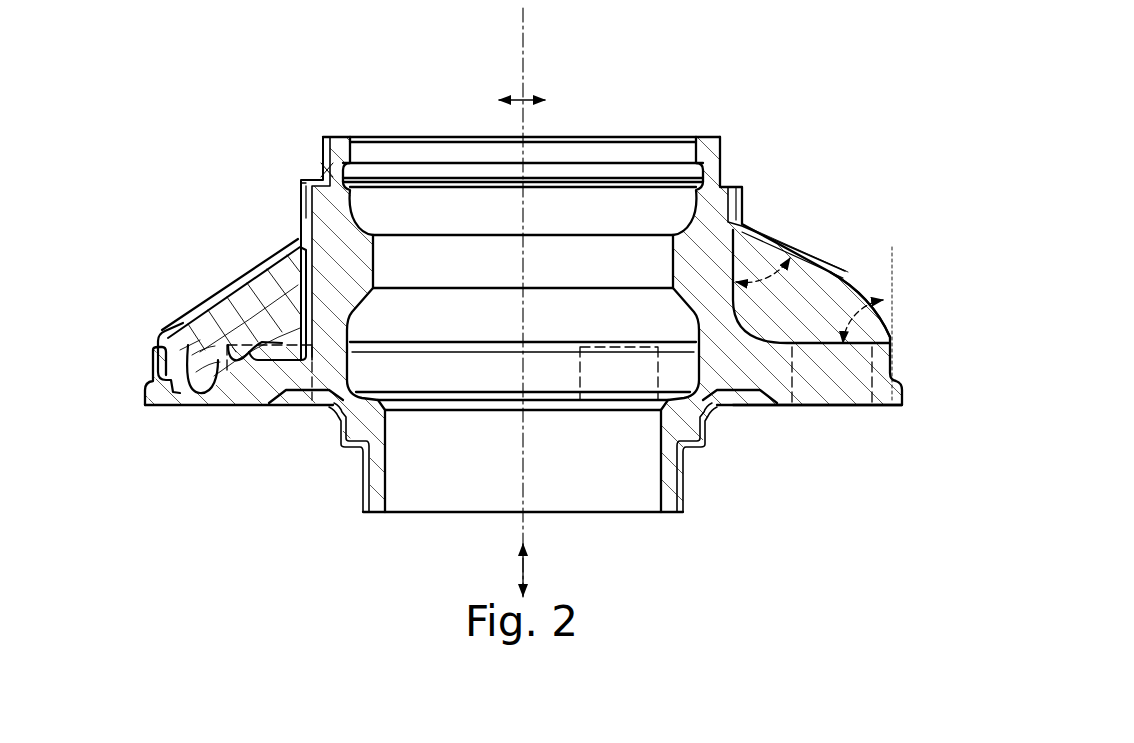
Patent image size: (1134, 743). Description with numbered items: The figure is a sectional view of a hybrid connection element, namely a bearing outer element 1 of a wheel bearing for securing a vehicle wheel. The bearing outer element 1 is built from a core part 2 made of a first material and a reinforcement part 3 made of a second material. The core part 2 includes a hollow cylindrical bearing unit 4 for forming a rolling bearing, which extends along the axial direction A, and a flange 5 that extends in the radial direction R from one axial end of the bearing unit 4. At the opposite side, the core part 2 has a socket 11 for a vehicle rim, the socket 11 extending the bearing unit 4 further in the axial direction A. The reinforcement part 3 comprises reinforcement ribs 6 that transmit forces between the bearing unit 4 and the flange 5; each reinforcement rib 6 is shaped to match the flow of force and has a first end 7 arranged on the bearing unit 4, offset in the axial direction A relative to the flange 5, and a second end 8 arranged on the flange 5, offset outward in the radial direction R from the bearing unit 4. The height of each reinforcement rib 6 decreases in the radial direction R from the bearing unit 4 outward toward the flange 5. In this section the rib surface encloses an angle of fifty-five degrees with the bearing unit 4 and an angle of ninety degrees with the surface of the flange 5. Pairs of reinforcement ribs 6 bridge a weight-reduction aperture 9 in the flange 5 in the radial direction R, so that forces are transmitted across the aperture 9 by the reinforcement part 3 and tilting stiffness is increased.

The bearing outer element 1 is at (800, 130).
The core part 2 is at (332, 203).
The reinforcement part 3 is at (257, 273).
The bearing unit 4 is at (306, 194).
The flange 5 is at (139, 402).
The reinforcement rib 6 is at (195, 300).
The first end 7 is at (752, 210).
The second end 8 is at (905, 330).
The weight-reduction aperture 9 is at (835, 420).
The socket 11 is at (350, 491).
The radial direction R is at (523, 100).
The axial direction A is at (523, 570).